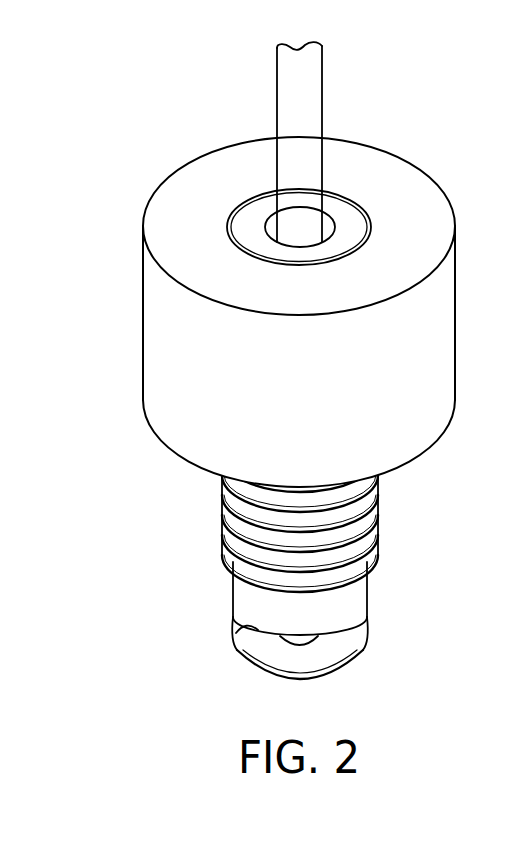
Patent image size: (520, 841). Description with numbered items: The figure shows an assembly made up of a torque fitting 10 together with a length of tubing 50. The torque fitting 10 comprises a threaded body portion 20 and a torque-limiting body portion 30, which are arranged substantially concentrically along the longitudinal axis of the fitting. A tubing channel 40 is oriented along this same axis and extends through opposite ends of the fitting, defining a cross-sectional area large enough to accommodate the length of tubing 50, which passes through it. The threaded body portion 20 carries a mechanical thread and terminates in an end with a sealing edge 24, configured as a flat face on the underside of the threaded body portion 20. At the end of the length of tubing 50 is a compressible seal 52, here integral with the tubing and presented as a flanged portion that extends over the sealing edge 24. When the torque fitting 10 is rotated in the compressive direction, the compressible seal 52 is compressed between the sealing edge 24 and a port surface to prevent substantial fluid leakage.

The torque fitting 10 is at (164, 81).
The threaded body portion 20 is at (358, 584).
The sealing edge 24 is at (258, 632).
The torque-limiting body portion 30 is at (450, 333).
The tubing channel 40 is at (329, 215).
The length of tubing 50 is at (315, 94).
The compressible seal 52 is at (345, 661).